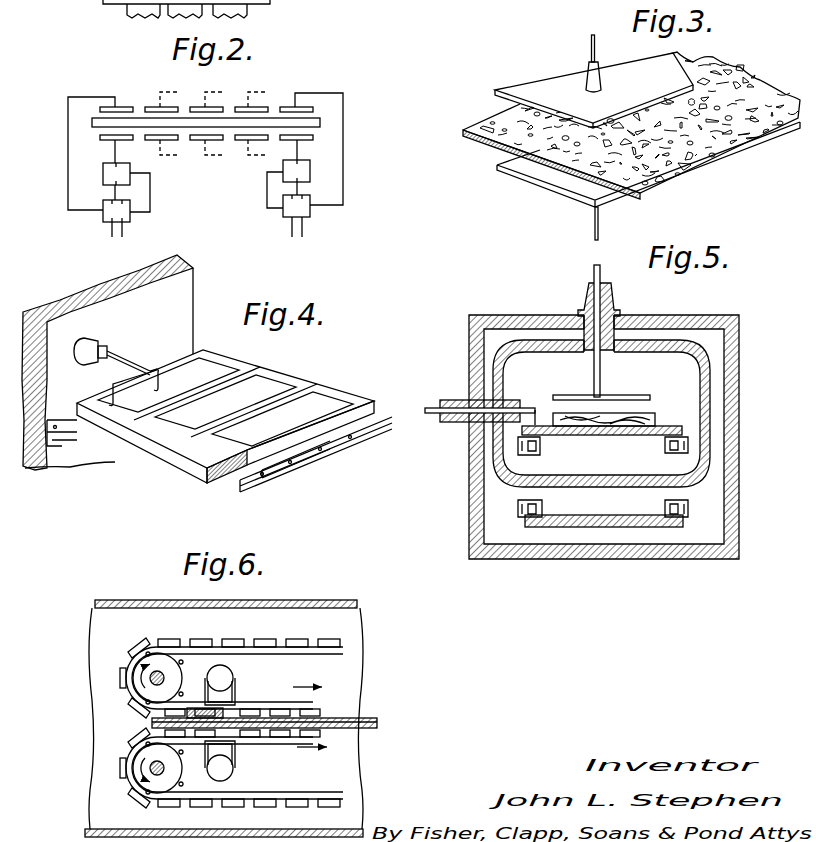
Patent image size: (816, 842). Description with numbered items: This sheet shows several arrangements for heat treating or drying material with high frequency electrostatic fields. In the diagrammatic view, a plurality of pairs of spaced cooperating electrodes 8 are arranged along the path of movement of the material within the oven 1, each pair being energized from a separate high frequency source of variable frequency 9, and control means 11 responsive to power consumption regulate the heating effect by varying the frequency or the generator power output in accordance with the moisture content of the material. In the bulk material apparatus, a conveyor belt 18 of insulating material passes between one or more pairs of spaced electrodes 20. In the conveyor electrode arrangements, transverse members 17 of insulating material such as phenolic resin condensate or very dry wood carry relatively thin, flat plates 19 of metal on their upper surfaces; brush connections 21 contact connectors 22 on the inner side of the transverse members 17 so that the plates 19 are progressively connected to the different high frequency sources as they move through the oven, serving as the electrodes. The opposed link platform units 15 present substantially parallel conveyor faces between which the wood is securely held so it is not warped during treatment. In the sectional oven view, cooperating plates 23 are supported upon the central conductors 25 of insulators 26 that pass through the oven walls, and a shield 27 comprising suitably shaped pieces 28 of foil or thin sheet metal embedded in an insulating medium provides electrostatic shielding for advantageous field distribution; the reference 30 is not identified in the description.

In FIG. 5, the oven 1 is at (737, 350).
In FIG. 2, the spaced cooperating electrodes 8 is at (155, 107).
In FIG. 2, the high frequency source of variable frequency 9 is at (103, 218).
In FIG. 2, the control means 11 is at (103, 173).
In FIG. 6, the link platform units 15 is at (288, 675).
In FIG. 4, the transverse members 17 is at (150, 450).
In FIG. 5, the transverse members 17 is at (677, 424).
In FIG. 6, the transverse members 17 is at (180, 636).
In FIG. 3, the conveyor belt 18 is at (697, 168).
In FIG. 4, the flat plates 19 is at (303, 410).
In FIG. 5, the flat plates 19 is at (590, 436).
In FIG. 6, the flat plates 19 is at (180, 723).
In FIG. 3, the spaced electrodes 20 is at (548, 80).
In FIG. 4, the brush connections 21 is at (110, 360).
In FIG. 5, the brush connections 21 is at (523, 407).
In FIG. 6, the brush connections 21 is at (236, 702).
In FIG. 6, the connectors 22 is at (243, 708).
In FIG. 5, the plates 23 is at (627, 395).
In FIG. 5, the central conductors 25 is at (602, 372).
In FIG. 5, the insulators 26 is at (585, 292).
In FIG. 5, the shield 27 is at (507, 348).
In FIG. 5, the pieces of foil or thin sheet metal 28 is at (508, 358).
In FIG. 5, the space 30 is at (704, 414).